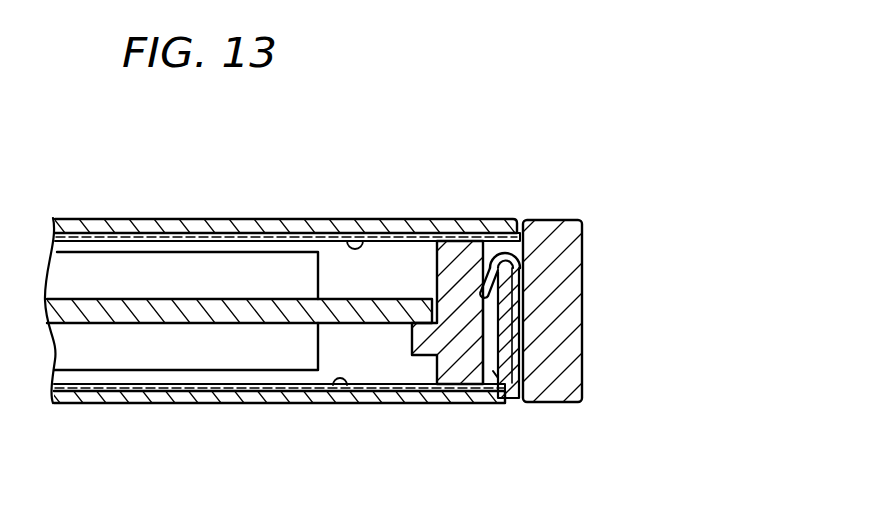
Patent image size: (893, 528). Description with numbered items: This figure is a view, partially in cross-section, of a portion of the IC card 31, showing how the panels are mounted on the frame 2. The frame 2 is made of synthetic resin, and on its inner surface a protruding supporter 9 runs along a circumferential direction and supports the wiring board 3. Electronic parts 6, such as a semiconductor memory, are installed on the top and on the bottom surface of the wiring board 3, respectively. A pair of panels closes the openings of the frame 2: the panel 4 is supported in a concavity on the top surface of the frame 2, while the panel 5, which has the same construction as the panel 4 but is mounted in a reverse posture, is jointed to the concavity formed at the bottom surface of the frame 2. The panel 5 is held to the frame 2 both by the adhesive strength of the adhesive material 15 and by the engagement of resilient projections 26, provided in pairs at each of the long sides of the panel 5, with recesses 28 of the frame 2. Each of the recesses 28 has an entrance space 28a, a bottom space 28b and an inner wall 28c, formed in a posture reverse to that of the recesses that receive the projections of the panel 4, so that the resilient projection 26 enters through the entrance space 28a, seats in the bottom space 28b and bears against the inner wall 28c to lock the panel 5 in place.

The frame 2 is at (568, 247).
The wiring board 3 is at (225, 303).
The panel 4 is at (152, 217).
The panel 5 is at (208, 404).
The electronic parts 6 is at (108, 267).
The protruding supporter 9 is at (408, 352).
The adhesive material 15 is at (347, 235).
The resilient projections 26 is at (510, 348).
The recesses 28 is at (493, 303).
The entrance space 28a is at (514, 388).
The bottom space 28b is at (504, 251).
The inner wall 28c is at (487, 297).
The IC card 31 is at (619, 196).